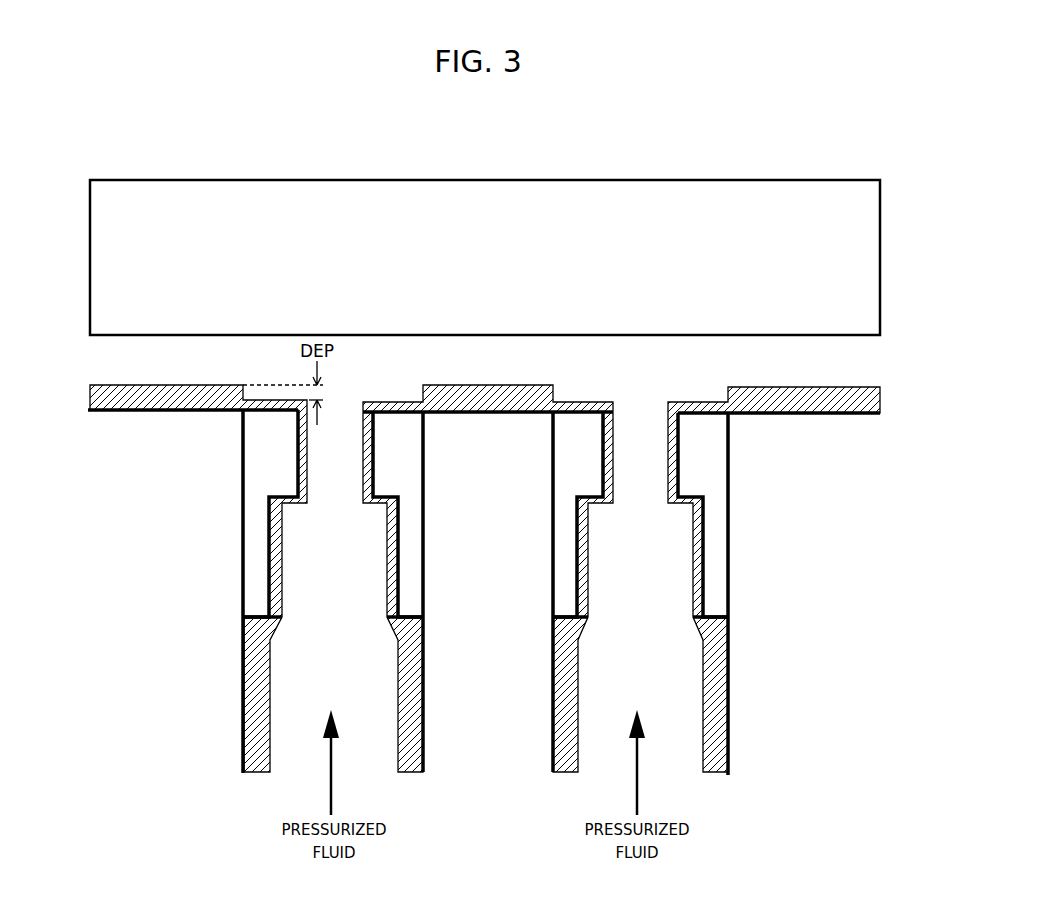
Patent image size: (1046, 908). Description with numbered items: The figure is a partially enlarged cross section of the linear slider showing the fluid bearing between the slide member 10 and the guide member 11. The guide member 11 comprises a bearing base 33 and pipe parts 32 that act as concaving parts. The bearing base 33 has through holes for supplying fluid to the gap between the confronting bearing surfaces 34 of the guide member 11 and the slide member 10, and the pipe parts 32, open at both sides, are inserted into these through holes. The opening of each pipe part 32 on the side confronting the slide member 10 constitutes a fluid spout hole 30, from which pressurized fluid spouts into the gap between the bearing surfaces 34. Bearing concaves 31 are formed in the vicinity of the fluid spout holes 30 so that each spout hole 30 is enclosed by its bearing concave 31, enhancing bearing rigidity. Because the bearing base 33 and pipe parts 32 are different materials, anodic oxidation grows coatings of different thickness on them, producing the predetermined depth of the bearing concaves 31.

The slide member 10 is at (664, 164).
The guide member 11 is at (848, 384).
The fluid spout hole 30 is at (336, 392).
The bearing concave 31 is at (265, 388).
The pipe part 32 is at (485, 513).
The bearing base 33 is at (484, 592).
The bearing surface 34 is at (131, 385).